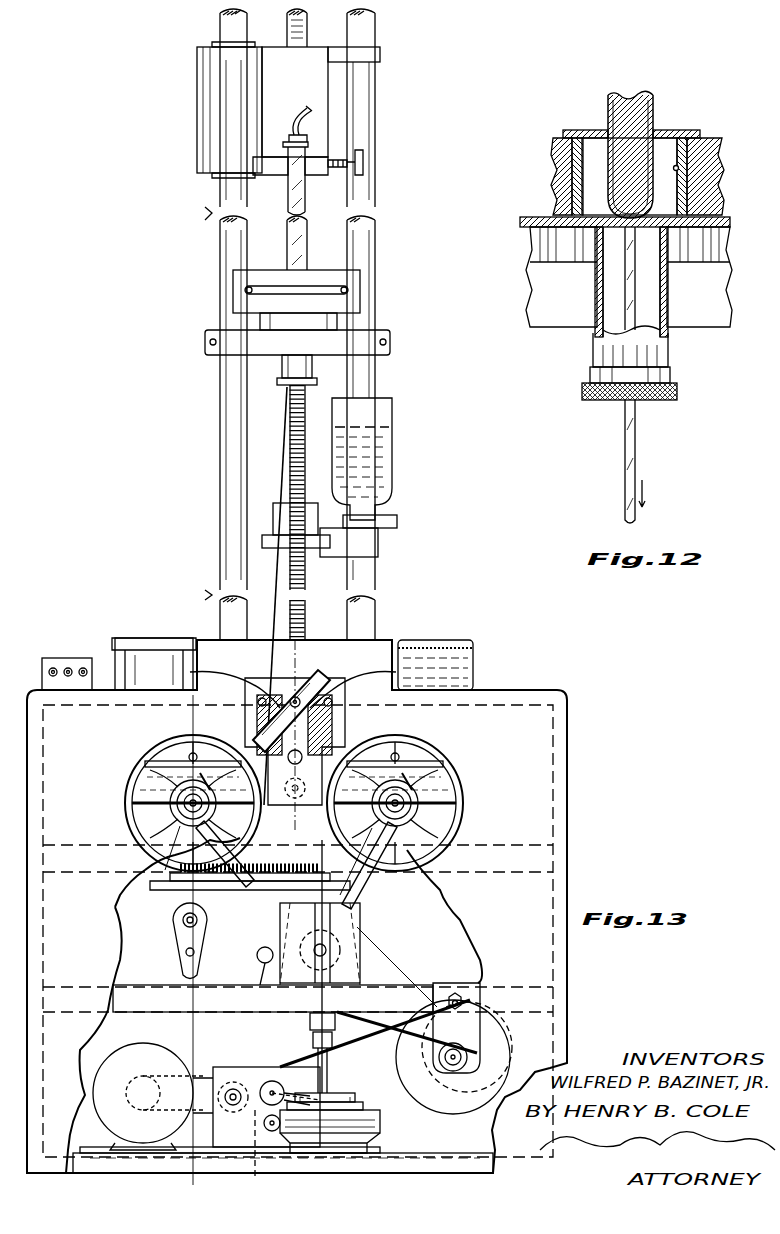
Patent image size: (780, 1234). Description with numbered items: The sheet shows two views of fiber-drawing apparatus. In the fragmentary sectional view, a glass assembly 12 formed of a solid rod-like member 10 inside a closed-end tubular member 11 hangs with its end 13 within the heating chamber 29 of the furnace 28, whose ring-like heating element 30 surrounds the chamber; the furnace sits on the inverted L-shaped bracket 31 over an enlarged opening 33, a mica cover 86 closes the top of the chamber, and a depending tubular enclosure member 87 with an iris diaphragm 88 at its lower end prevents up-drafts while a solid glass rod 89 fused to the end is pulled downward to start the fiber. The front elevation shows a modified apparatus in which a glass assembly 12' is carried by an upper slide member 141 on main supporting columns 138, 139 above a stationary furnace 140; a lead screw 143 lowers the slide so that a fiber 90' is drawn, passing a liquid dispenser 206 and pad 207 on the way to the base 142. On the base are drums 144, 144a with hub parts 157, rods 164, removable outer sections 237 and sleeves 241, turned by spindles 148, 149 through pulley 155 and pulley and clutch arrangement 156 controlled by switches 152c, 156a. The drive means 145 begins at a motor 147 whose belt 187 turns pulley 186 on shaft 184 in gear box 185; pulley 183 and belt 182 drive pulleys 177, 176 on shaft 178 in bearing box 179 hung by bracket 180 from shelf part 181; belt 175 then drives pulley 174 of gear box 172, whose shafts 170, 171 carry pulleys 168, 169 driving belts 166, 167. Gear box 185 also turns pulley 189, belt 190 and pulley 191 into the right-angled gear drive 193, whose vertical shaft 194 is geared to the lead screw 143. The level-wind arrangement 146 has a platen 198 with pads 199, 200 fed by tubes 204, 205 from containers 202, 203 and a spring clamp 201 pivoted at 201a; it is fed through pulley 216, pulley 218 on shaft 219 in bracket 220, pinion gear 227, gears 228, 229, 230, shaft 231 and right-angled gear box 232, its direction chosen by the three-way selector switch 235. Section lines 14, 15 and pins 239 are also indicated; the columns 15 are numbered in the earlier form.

In FIG. 12, the solid rod-like member 10 is at (632, 96).
In FIG. 12, the tubular member 11 is at (612, 110).
In FIG. 12, the glass rod and tube assembly 12 is at (654, 153).
In FIG. 12, the end of the assembly 13 is at (659, 230).
In FIG. 12, the furnace 28 is at (544, 148).
In FIG. 12, the heating chamber 29 is at (592, 178).
In FIG. 12, the heating element 30 is at (680, 170).
In FIG. 12, the bracket 31 is at (728, 240).
In FIG. 12, the opening 33 is at (561, 258).
In FIG. 12, the cover 86 is at (690, 130).
In FIG. 12, the tubular enclosure member 87 is at (679, 355).
In FIG. 12, the iris diaphragm 88 is at (658, 403).
In FIG. 12, the solid glass rod 89 is at (634, 452).
In FIG. 13, the glass rod and tube assembly 12' is at (309, 139).
In FIG. 13, the section line 14 is at (199, 702).
In FIG. 13, the column 15 is at (289, 659).
In FIG. 13, the fiber 90' is at (267, 596).
In FIG. 13, the main supporting column 138 is at (220, 395).
In FIG. 13, the main supporting column 139 is at (367, 372).
In FIG. 13, the stationary furnace 140 is at (243, 289).
In FIG. 13, the upper slide member 141 is at (205, 108).
In FIG. 13, the base 142 is at (576, 778).
In FIG. 13, the lead screw 143 is at (300, 573).
In FIG. 13, the rotatable drum 144 is at (120, 778).
In FIG. 13, the rotatable drum 144a is at (467, 768).
In FIG. 13, the drive means 145 is at (113, 977).
In FIG. 13, the level-wind arrangement 146 is at (343, 724).
In FIG. 13, the motor 147 is at (100, 1105).
In FIG. 13, the drive spindle 148 is at (150, 815).
In FIG. 13, the drive spindle 149 is at (445, 818).
In FIG. 13, the electrical switch 152c is at (83, 668).
In FIG. 13, the pulley 155 is at (135, 790).
In FIG. 13, the pulley and magnetic clutch arrangement 156 is at (440, 790).
In FIG. 13, the electrical switch 156a is at (66, 668).
In FIG. 13, the hub part 157 is at (185, 822).
In FIG. 13, the rod 164 is at (138, 803).
In FIG. 13, the belt 166 is at (150, 862).
In FIG. 13, the belt 167 is at (365, 900).
In FIG. 13, the pulley 168 is at (366, 1026).
In FIG. 13, the pulley 169 is at (380, 955).
In FIG. 13, the shaft 170 is at (254, 966).
In FIG. 13, the shaft 171 is at (336, 966).
In FIG. 13, the gear box 172 is at (273, 998).
In FIG. 13, the pulley 174 is at (363, 945).
In FIG. 13, the belt 175 is at (403, 965).
In FIG. 13, the pulley 176 is at (500, 1030).
In FIG. 13, the pulley 177 is at (485, 1105).
In FIG. 13, the shaft 178 is at (470, 1053).
In FIG. 13, the bearing box 179 is at (420, 1050).
In FIG. 13, the bracket 180 is at (470, 985).
In FIG. 13, the shelf part 181 is at (520, 980).
In FIG. 13, the belt 182 is at (447, 1120).
In FIG. 13, the pulley 183 is at (195, 1063).
In FIG. 13, the shaft 184 is at (179, 1093).
In FIG. 13, the gear box 185 is at (240, 1068).
In FIG. 13, the pulley 186 is at (220, 1083).
In FIG. 13, the belt 187 is at (155, 1112).
In FIG. 13, the pulley 189 is at (275, 1087).
In FIG. 13, the belt 190 is at (262, 1128).
In FIG. 13, the pulley 191 is at (252, 1153).
In FIG. 13, the right-angled gear drive mechanism 193 is at (378, 1125).
In FIG. 13, the vertically extending shaft 194 is at (330, 1078).
In FIG. 13, the platen 198 is at (279, 742).
In FIG. 13, the felt pad 199 is at (255, 712).
In FIG. 13, the felt pad 200 is at (330, 688).
In FIG. 13, the spring clamp 201 is at (262, 700).
In FIG. 13, the pivot 201a is at (308, 690).
In FIG. 13, the container 202 is at (150, 662).
In FIG. 13, the container 203 is at (472, 660).
In FIG. 13, the tube 204 is at (230, 680).
In FIG. 13, the tube 205 is at (368, 680).
In FIG. 13, the liquid dispenser 206 is at (370, 462).
In FIG. 13, the pad 207 is at (290, 510).
In FIG. 13, the pulley 216 is at (185, 950).
In FIG. 13, the pulley 218 is at (175, 915).
In FIG. 13, the shaft 219 is at (219, 925).
In FIG. 13, the bracket 220 is at (178, 930).
In FIG. 13, the pinion gear 227 is at (165, 880).
In FIG. 13, the gear 228 is at (115, 905).
In FIG. 13, the gear 229 is at (262, 865).
In FIG. 13, the gear 230 is at (368, 870).
In FIG. 13, the shaft 231 is at (362, 861).
In FIG. 13, the right-angled gear box 232 is at (255, 860).
In FIG. 13, the three-way selector switch 235 is at (50, 670).
In FIG. 13, the removable outer section 237 is at (192, 755).
In FIG. 13, the pin 239 is at (205, 778).
In FIG. 13, the sleeve 241 is at (138, 760).